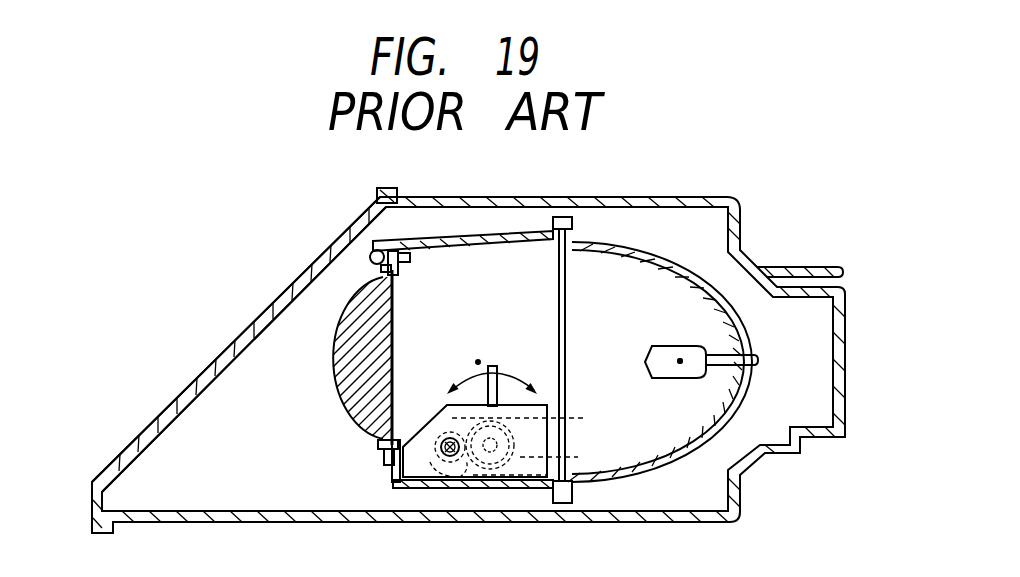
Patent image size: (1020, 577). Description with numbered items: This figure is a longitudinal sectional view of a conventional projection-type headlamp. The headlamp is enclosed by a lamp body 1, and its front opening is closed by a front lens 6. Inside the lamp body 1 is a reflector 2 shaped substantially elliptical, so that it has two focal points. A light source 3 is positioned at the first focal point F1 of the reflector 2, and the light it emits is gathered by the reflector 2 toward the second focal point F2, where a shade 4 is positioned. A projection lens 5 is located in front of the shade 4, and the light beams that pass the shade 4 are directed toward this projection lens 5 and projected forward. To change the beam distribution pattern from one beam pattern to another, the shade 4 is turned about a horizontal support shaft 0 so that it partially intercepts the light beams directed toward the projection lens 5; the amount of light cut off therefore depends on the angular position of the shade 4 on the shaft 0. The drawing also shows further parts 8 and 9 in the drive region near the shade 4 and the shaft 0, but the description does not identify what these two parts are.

The lamp body 1 is at (720, 197).
The reflector 2 is at (638, 254).
The light source 3 is at (662, 378).
The shade 4 is at (502, 333).
The projection lens 5 is at (340, 404).
The front lens 6 is at (318, 258).
The gear 8 is at (528, 437).
The shade shaft 9 is at (500, 368).
The horizontal support shaft 0 is at (514, 454).
The first focal point F1 is at (682, 336).
The second focal point F2 is at (483, 349).